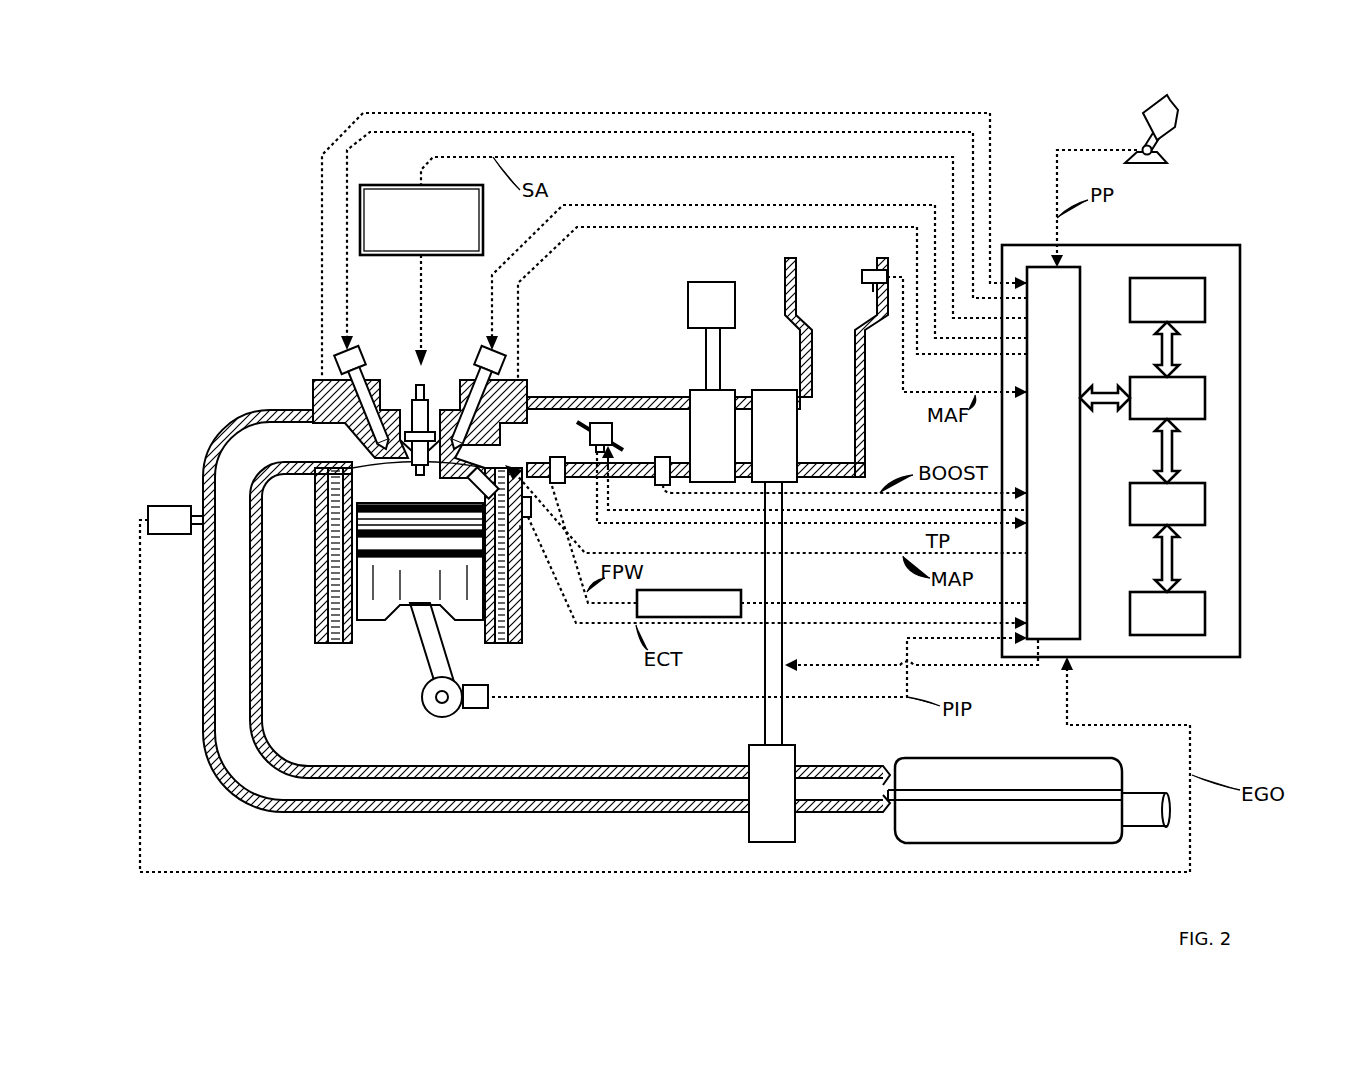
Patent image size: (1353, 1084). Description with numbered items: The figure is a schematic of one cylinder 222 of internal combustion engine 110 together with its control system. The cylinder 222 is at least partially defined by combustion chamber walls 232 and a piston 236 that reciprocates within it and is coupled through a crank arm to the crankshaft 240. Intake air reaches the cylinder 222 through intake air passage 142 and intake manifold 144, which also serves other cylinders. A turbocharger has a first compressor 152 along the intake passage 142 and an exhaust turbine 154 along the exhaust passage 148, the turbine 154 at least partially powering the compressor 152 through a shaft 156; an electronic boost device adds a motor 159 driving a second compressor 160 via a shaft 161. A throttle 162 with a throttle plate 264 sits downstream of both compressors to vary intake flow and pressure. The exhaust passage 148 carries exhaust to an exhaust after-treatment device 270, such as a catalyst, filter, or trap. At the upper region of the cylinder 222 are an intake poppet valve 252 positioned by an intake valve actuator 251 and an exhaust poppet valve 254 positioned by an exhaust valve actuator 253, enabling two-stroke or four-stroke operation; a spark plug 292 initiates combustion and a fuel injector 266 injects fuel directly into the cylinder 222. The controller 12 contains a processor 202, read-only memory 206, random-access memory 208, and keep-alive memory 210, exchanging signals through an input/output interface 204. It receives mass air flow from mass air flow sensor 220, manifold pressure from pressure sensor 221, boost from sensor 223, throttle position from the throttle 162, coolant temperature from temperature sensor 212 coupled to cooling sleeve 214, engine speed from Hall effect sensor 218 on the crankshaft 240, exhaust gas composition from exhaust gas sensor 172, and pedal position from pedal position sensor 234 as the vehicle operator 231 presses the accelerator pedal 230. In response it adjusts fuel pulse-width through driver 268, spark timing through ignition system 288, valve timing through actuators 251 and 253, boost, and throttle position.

The controller 12 is at (1162, 437).
The internal combustion engine 110 is at (243, 326).
The intake air passage 142 is at (836, 367).
The intake manifold 144 is at (696, 437).
The exhaust passage 148 is at (476, 611).
The first compressor 152 is at (774, 436).
The exhaust turbine 154 is at (772, 793).
The shaft 156 is at (785, 718).
The motor 159 is at (711, 305).
The second compressor 160 is at (712, 436).
The shaft 161 is at (706, 366).
The throttle 162 is at (604, 420).
The exhaust gas sensor 172 is at (148, 514).
The processor 202 is at (1205, 395).
The input/output interface 204 is at (1085, 272).
The read-only memory 206 is at (1205, 295).
The random-access memory 208 is at (1205, 503).
The keep-alive memory 210 is at (1205, 613).
The temperature sensor 212 is at (528, 518).
The cooling sleeve 214 is at (522, 525).
The Hall effect sensor 218 is at (486, 710).
The mass air flow sensor 220 is at (868, 268).
The pressure sensor 221 is at (560, 486).
The cylinder 222 is at (325, 508).
The boost sensor 223 is at (657, 486).
The accelerator pedal 230 is at (1179, 129).
The vehicle operator 231 is at (1178, 112).
The combustion chamber walls 232 is at (352, 645).
The pedal position sensor 234 is at (1160, 150).
The piston 236 is at (400, 600).
The crankshaft 240 is at (432, 714).
The intake valve actuator 251 is at (480, 350).
The intake poppet valve 252 is at (436, 437).
The exhaust valve actuator 253 is at (367, 350).
The exhaust poppet valve 254 is at (315, 410).
The throttle plate 264 is at (597, 420).
The fuel injector 266 is at (492, 470).
The driver 268 is at (688, 590).
The exhaust after-treatment device 270 is at (1080, 768).
The ignition system 288 is at (377, 185).
The spark plug 292 is at (412, 420).